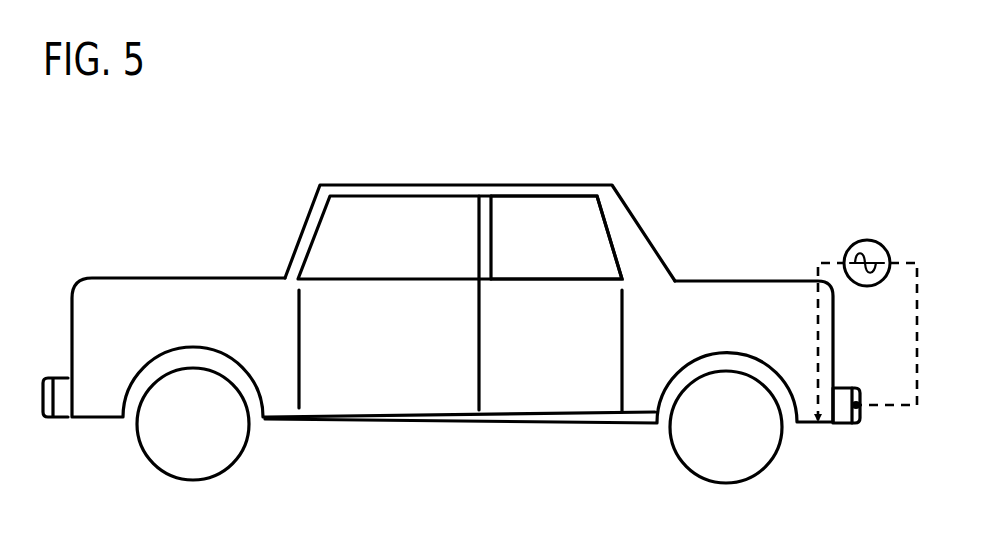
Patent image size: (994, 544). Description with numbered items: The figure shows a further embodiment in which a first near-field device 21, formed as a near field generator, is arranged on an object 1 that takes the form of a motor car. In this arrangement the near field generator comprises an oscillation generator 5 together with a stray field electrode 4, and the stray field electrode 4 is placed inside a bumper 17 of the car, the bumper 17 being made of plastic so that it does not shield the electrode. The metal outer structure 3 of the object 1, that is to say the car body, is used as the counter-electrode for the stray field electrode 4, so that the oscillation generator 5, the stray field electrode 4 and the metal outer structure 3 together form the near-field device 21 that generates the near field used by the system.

The object 1 is at (590, 421).
The metal outer structure 3 is at (559, 357).
The stray field electrode 4 is at (862, 417).
The oscillation generator 5 is at (866, 240).
The bumper 17 is at (845, 425).
The first near-field device 21 is at (832, 200).